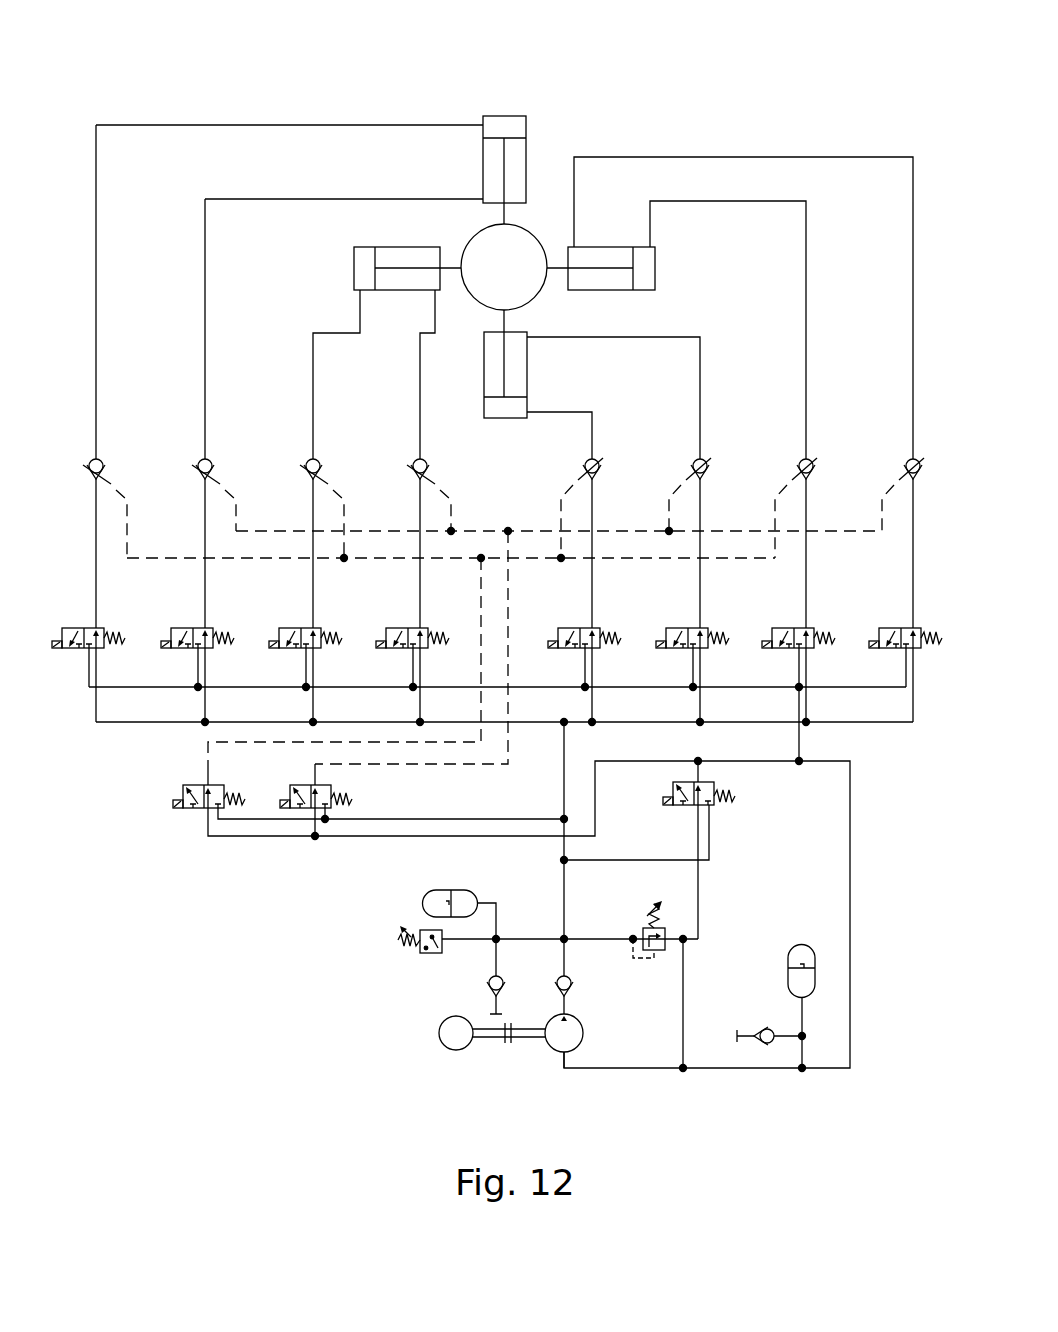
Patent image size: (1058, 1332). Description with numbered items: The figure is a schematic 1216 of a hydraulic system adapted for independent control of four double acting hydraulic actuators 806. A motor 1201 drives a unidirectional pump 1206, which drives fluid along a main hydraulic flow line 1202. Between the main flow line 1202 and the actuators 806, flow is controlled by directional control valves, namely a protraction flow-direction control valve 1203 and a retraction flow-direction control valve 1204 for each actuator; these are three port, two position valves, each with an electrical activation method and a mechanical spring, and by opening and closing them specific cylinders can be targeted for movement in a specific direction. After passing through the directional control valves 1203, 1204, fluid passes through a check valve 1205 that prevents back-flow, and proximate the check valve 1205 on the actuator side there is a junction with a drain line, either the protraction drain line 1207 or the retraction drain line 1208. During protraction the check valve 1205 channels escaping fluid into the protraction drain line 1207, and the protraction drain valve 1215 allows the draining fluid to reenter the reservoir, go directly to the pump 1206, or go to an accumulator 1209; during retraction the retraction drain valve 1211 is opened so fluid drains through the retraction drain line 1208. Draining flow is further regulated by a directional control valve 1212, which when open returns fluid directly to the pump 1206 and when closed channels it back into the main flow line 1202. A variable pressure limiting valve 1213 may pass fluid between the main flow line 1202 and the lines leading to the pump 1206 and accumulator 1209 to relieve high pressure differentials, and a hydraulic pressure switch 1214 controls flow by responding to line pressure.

The schematic 1216 is at (188, 72).
The double acting hydraulic actuator 806 is at (549, 128).
The check valve 1205 is at (120, 444).
The protraction drain line 1207 is at (185, 508).
The retraction drain line 1208 is at (875, 546).
The retraction flow-direction control valve 1204 is at (63, 674).
The protraction flow-direction control valve 1203 is at (174, 670).
The main hydraulic flow line 1202 is at (543, 772).
The protraction drain valve 1215 is at (181, 840).
The retraction drain valve 1211 is at (294, 828).
The directional control valve 1212 is at (742, 826).
The variable pressure limiting valve 1213 is at (664, 968).
The hydraulic pressure switch 1214 is at (408, 968).
The accumulator 1209 is at (837, 967).
The unidirectional pump 1206 is at (582, 1070).
The motor 1201 is at (434, 1077).